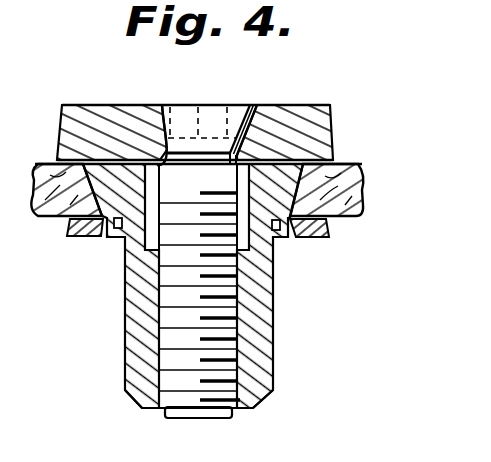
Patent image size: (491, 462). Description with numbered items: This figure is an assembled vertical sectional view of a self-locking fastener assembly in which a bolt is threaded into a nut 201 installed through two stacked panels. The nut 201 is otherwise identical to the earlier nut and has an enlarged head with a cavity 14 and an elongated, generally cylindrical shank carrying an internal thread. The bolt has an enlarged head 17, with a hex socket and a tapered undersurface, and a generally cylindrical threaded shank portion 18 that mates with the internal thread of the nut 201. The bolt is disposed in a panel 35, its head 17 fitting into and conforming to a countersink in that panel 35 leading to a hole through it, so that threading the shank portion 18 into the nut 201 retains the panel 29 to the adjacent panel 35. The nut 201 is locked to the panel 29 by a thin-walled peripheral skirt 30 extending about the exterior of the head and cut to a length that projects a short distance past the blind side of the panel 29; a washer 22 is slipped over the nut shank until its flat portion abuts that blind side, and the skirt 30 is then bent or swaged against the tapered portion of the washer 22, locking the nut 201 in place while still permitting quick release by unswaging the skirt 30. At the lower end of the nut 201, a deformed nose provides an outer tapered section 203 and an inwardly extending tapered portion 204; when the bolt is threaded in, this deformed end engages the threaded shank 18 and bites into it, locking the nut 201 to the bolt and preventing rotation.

The cavity 14 is at (163, 147).
The enlarged head 17 is at (248, 108).
The threaded shank portion 18 is at (177, 338).
The washer 22 is at (322, 232).
The panel 29 is at (42, 162).
The thin-walled peripheral skirt 30 is at (112, 245).
The panel 35 is at (313, 117).
The nut 201 is at (286, 348).
The outer tapered section 203 is at (135, 404).
The inwardly extending tapered portion 204 is at (262, 398).